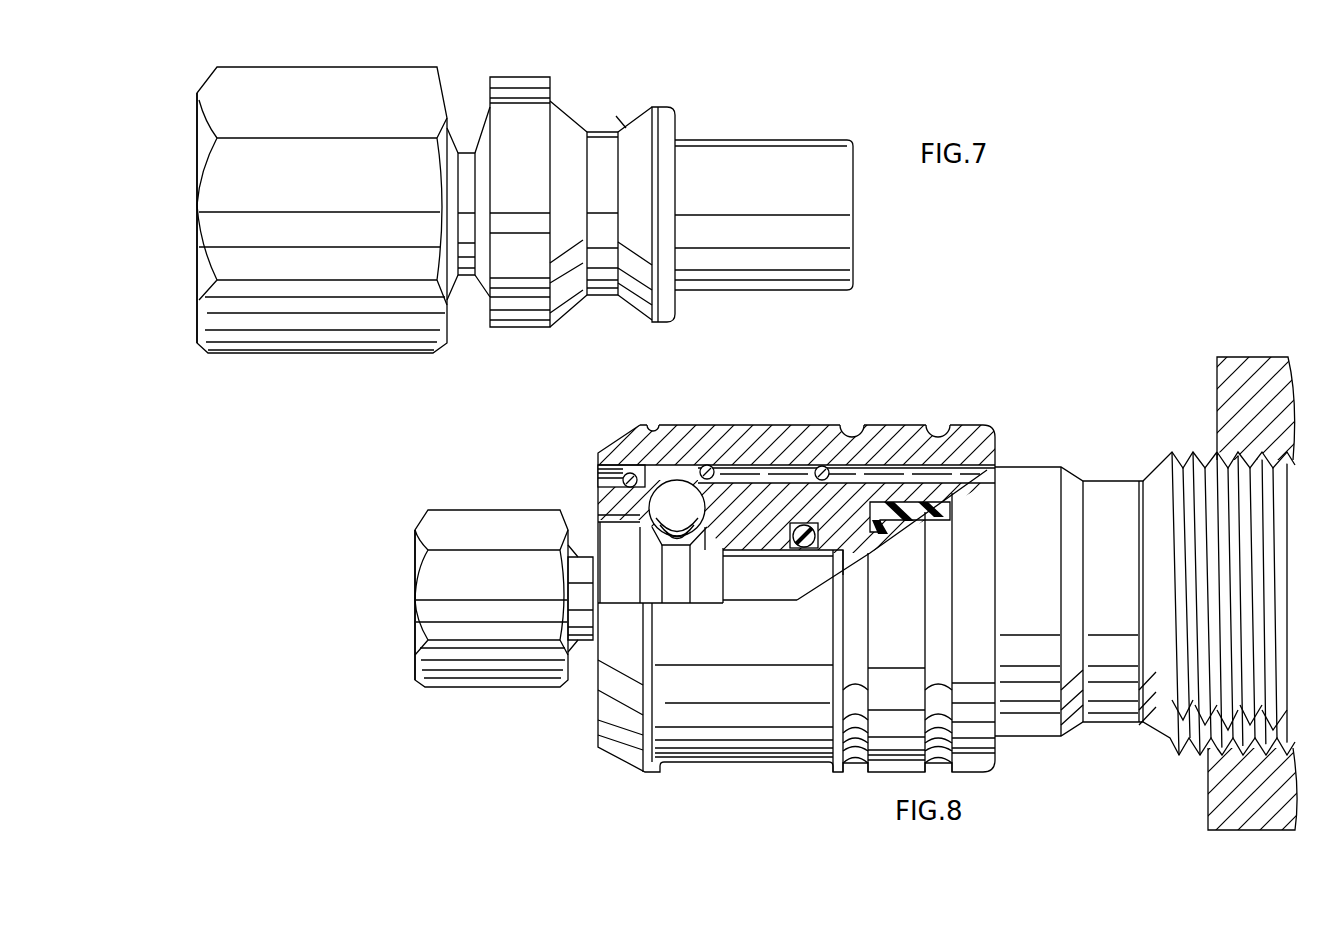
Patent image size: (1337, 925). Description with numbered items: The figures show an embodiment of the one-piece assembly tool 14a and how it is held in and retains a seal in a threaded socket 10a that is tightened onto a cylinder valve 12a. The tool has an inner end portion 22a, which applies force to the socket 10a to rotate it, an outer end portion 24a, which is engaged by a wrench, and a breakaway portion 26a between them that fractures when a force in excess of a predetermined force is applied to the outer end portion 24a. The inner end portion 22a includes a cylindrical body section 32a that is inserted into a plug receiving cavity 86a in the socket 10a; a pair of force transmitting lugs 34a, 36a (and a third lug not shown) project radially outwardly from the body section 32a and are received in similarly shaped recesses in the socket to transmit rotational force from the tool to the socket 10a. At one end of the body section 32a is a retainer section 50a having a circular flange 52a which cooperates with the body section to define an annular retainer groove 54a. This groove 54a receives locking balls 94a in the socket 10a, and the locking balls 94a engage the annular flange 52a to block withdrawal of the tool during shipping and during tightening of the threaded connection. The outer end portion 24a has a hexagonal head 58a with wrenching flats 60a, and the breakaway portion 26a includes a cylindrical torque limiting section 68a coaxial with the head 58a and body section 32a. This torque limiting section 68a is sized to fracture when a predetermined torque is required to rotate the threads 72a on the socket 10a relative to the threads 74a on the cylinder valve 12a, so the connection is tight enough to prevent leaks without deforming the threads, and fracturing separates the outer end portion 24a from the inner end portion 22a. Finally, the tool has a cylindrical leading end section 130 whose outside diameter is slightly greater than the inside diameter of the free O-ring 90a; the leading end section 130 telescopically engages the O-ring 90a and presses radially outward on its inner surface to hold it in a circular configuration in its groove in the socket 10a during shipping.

In FIG. 8, the socket 10a is at (985, 426).
In FIG. 8, the cylinder valve 12a is at (1283, 357).
In FIG. 7, the assembly tool 14a is at (184, 103).
In FIG. 8, the assembly tool 14a is at (382, 593).
In FIG. 7, the inner end portion 22a is at (618, 112).
In FIG. 7, the outer end portion 24a is at (386, 62).
In FIG. 8, the outer end portion 24a is at (482, 508).
In FIG. 7, the breakaway portion 26a is at (465, 110).
In FIG. 8, the breakaway portion 26a is at (581, 652).
In FIG. 7, the cylindrical body section 32a is at (525, 112).
In FIG. 8, the cylindrical body section 32a is at (620, 590).
In FIG. 7, the force transmitting lug 34a is at (523, 88).
In FIG. 8, the force transmitting lug 34a is at (597, 512).
In FIG. 7, the force transmitting lug 36a is at (515, 290).
In FIG. 7, the retainer section 50a is at (620, 128).
In FIG. 7, the circular flange 52a is at (680, 125).
In FIG. 8, the circular flange 52a is at (725, 567).
In FIG. 7, the annular retainer groove 54a is at (597, 303).
In FIG. 8, the annular retainer groove 54a is at (675, 590).
In FIG. 7, the hexagonal head 58a is at (201, 345).
In FIG. 8, the hexagonal head 58a is at (414, 681).
In FIG. 7, the wrenching flats 60a is at (325, 262).
In FIG. 8, the wrenching flats 60a is at (486, 665).
In FIG. 7, the cylindrical torque limiting section 68a is at (468, 187).
In FIG. 8, the cylindrical torque limiting section 68a is at (583, 590).
In FIG. 8, the threads 72a is at (1162, 440).
In FIG. 8, the threads 74a is at (1235, 448).
In FIG. 8, the plug receiving cavity 86a is at (828, 560).
In FIG. 8, the O-ring 90a is at (805, 540).
In FIG. 8, the locking balls 94a is at (676, 508).
In FIG. 7, the leading end section 130 is at (768, 258).
In FIG. 8, the leading end section 130 is at (737, 588).